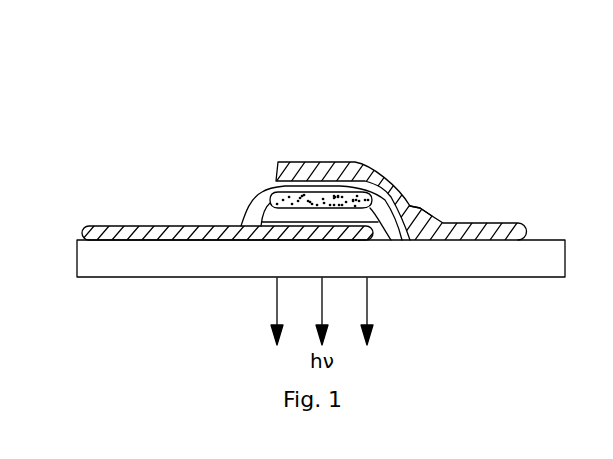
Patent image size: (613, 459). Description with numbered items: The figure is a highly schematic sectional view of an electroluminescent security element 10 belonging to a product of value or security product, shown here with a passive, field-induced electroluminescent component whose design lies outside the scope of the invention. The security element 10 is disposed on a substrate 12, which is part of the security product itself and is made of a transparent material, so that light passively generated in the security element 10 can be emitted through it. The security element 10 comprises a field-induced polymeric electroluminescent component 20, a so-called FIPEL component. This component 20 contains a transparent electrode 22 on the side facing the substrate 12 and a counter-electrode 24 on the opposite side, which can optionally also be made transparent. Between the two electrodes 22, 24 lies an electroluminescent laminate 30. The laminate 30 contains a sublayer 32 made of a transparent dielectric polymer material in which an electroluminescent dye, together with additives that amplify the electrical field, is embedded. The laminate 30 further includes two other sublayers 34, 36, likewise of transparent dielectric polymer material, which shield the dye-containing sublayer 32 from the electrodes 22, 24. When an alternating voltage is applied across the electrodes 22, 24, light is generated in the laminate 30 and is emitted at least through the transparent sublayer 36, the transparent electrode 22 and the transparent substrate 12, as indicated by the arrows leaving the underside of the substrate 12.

The electroluminescent security element 10 is at (188, 97).
The substrate 12 is at (528, 268).
The field-induced polymeric electroluminescent component 20 is at (324, 152).
The transparent electrode 22 is at (87, 229).
The counter-electrode 24 is at (522, 225).
The electroluminescent laminate 30 is at (222, 183).
The sublayer 32 is at (392, 190).
The sublayer 34 is at (373, 161).
The sublayer 36 is at (425, 206).